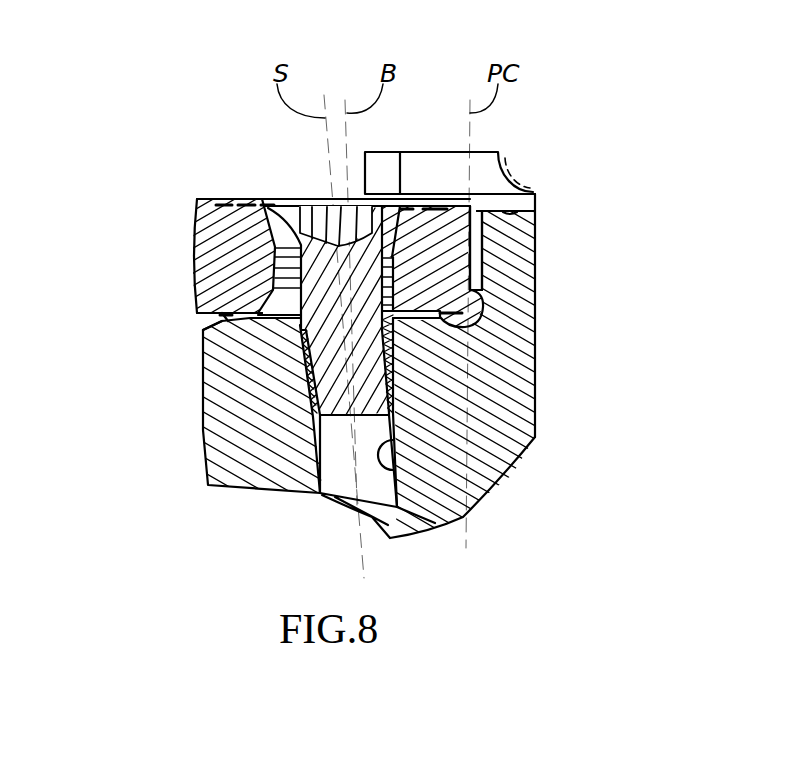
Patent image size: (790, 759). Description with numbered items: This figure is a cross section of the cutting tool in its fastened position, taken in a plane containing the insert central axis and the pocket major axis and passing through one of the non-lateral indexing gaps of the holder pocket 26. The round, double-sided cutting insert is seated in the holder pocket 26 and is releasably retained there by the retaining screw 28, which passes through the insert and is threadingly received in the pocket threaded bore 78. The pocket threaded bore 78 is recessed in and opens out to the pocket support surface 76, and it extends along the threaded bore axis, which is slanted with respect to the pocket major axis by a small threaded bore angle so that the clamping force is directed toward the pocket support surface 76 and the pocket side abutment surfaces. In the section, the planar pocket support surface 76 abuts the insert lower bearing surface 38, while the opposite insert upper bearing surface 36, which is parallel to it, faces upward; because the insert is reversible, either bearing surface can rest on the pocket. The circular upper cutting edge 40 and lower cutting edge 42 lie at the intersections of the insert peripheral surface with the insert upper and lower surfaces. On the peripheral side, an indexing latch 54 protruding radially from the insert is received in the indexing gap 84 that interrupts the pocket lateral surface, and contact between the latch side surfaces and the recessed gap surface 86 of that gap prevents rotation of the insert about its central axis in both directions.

The holder pocket 26 is at (130, 170).
The retaining screw 28 is at (280, 200).
The insert upper bearing surface 36 is at (247, 200).
The insert lower bearing surface 38 is at (224, 327).
The upper cutting edge 40 is at (197, 199).
The lower cutting edge 42 is at (222, 322).
The indexing latch 54 is at (490, 275).
The pocket support surface 76 is at (256, 312).
The pocket threaded bore 78 is at (393, 470).
The indexing gap 84 is at (480, 200).
The gap surface 86 is at (478, 238).